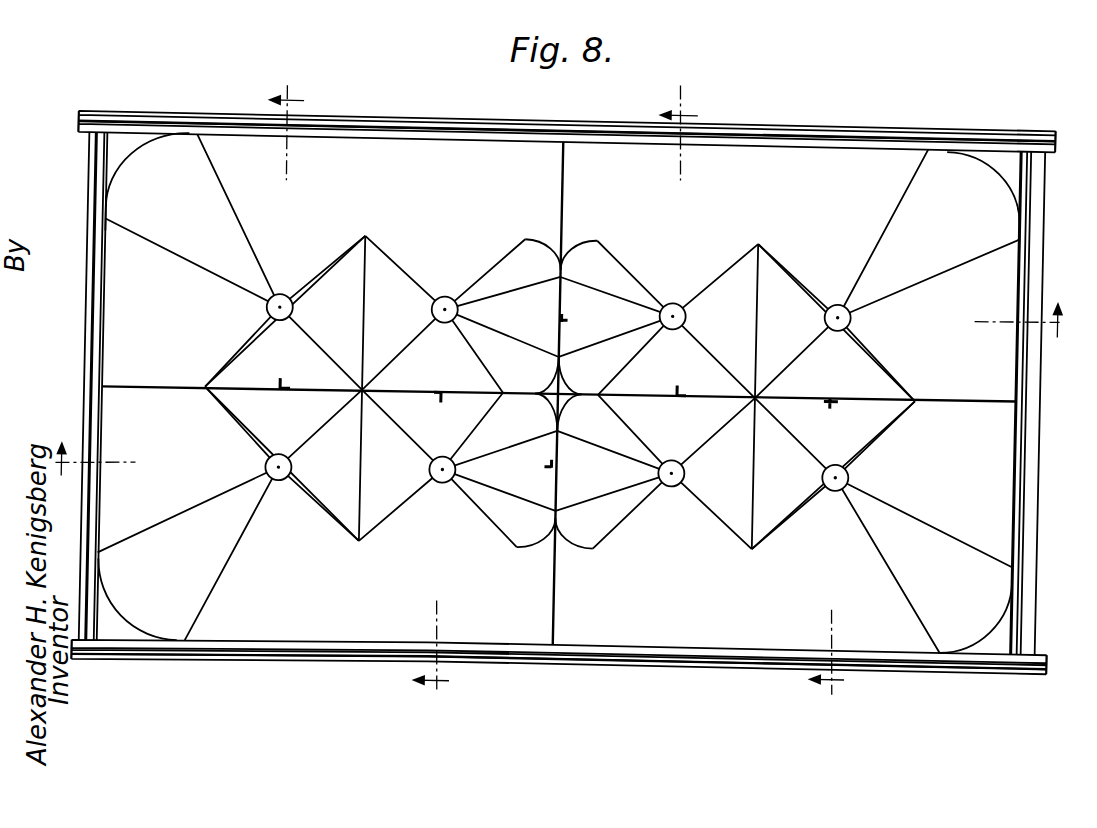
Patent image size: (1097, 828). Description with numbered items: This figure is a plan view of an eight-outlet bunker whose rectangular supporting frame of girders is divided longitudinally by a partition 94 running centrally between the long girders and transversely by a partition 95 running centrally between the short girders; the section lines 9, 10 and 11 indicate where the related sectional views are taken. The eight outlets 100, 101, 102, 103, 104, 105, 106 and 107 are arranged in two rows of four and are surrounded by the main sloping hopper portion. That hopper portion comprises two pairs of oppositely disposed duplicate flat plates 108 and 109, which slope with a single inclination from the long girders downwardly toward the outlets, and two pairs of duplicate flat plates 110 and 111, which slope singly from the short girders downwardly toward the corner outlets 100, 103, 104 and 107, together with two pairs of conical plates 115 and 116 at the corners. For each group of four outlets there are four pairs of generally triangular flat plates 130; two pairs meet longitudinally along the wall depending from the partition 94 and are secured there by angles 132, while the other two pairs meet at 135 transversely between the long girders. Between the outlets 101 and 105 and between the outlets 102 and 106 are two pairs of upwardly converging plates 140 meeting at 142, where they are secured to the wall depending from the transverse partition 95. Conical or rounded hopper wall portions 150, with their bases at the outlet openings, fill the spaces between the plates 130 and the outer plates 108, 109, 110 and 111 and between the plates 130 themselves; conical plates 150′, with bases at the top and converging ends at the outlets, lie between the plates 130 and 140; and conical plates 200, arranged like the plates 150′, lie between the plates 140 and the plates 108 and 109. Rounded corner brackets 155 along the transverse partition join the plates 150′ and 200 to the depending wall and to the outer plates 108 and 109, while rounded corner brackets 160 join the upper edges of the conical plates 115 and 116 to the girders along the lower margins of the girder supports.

The section line 9- 9 is at (569, 397).
The section line 10- 10 is at (359, 395).
The section line 11- 11 is at (753, 391).
The longitudinal partition 94 is at (168, 388).
The transverse partition 95 is at (557, 192).
The outlet 100 is at (265, 315).
The outlet 101 is at (430, 313).
The outlet 102 is at (671, 300).
The outlet 103 is at (823, 312).
The outlet 104 is at (266, 472).
The outlet 105 is at (430, 473).
The outlet 106 is at (660, 473).
The outlet 107 is at (833, 490).
The flat plate 108 is at (378, 130).
The flat plate 109 is at (742, 132).
The flat plate 110 is at (112, 319).
The flat plate 111 is at (155, 508).
The conical plate 115 is at (152, 247).
The conical plate 116 is at (908, 172).
The flat plate 130 is at (363, 238).
The angle 132 is at (282, 383).
The meeting edges 135 is at (345, 246).
The upwardly converging plate 140 is at (520, 333).
The meeting point of plates 140 142 is at (556, 318).
The conical hopper wall portion 150 is at (318, 336).
The conical plate 150′ is at (645, 384).
The corner bracket 155 is at (575, 240).
The corner bracket 160 is at (118, 161).
The conical plate 200 is at (508, 260).